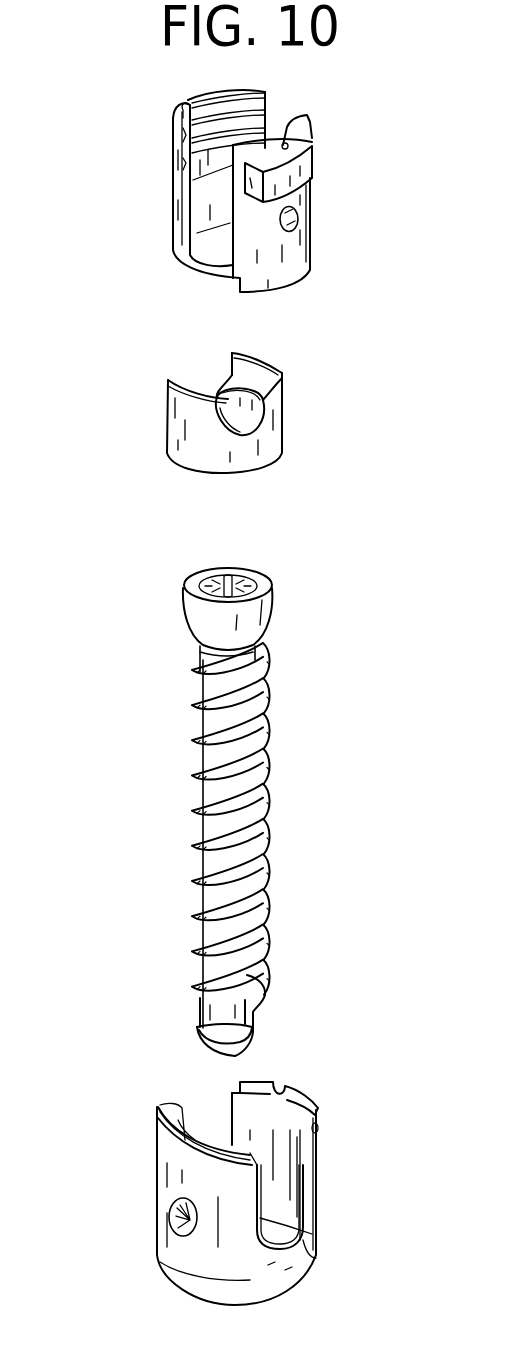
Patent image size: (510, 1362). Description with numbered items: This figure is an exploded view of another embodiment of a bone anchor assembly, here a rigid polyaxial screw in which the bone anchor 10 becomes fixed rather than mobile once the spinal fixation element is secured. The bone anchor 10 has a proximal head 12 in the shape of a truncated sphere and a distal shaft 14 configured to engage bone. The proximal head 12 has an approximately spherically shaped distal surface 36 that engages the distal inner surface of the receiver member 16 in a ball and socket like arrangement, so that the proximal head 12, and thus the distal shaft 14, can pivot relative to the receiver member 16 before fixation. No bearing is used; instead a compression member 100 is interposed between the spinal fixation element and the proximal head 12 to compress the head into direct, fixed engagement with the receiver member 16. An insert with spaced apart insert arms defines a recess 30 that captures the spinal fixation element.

The bone anchor 10 is at (239, 811).
The proximal head 12 is at (200, 602).
The distal shaft 14 is at (267, 850).
The receiver member 16 is at (130, 1236).
The recess 30 is at (320, 226).
The distal surface 36 is at (187, 627).
The compression member 100 is at (307, 414).